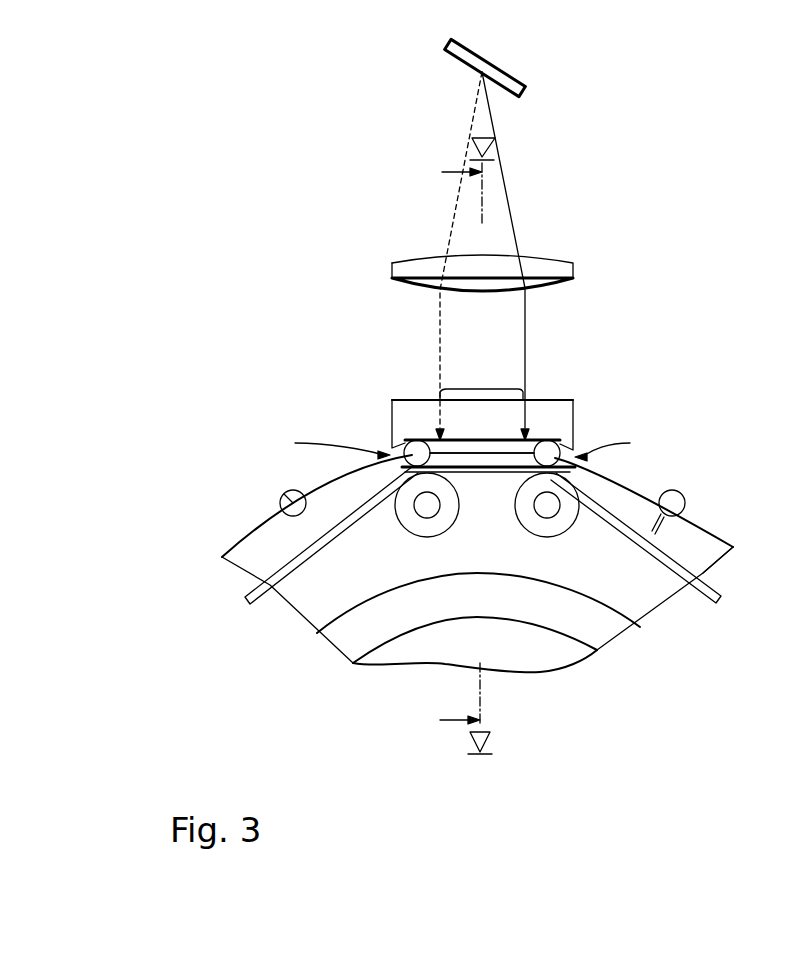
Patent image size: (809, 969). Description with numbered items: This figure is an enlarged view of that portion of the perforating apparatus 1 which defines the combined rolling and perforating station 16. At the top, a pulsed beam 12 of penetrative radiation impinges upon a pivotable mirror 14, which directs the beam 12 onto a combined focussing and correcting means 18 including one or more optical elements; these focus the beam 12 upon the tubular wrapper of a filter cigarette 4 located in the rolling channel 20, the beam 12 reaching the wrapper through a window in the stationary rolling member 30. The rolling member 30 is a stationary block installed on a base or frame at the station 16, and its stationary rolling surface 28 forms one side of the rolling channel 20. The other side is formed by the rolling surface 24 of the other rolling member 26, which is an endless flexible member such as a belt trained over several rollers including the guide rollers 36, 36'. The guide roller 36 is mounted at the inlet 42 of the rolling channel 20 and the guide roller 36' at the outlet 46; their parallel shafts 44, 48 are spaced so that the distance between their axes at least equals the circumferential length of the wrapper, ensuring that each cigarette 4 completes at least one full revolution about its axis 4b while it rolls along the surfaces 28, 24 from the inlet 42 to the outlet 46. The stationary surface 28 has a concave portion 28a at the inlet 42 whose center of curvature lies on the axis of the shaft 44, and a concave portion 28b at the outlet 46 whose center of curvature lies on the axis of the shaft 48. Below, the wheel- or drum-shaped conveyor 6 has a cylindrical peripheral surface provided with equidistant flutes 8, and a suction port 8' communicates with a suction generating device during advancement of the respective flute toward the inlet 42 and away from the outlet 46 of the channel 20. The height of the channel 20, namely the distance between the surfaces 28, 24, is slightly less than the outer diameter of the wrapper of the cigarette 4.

The perforating apparatus 1 is at (697, 130).
The filter cigarette 4 is at (280, 501).
The axis of the cigarette 4b is at (553, 440).
The conveyor 6 is at (653, 588).
The flutes 8 is at (452, 547).
The suction port 8' is at (746, 583).
The pulsed beam 12 is at (502, 168).
The pivotable mirror 14 is at (487, 62).
The combined rolling and perforating station 16 is at (478, 392).
The combined focussing and correcting means 18 is at (558, 262).
The rolling channel 20 is at (428, 435).
The rolling surface of the flexible rolling member 24 is at (499, 448).
The flexible rolling member 26 is at (258, 600).
The stationary rolling surface 28 is at (473, 452).
The concave portion of the stationary rolling surface at the inlet 28a is at (549, 450).
The concave portion of the stationary rolling surface at the outlet 28b is at (413, 445).
The stationary rolling member 30 is at (430, 405).
The guide roller 36 is at (602, 599).
The guide roller 36' is at (368, 601).
The inlet of the rolling channel 42 is at (619, 444).
The shaft 44 is at (547, 510).
The outlet of the rolling channel 46 is at (325, 444).
The shaft 48 is at (428, 508).